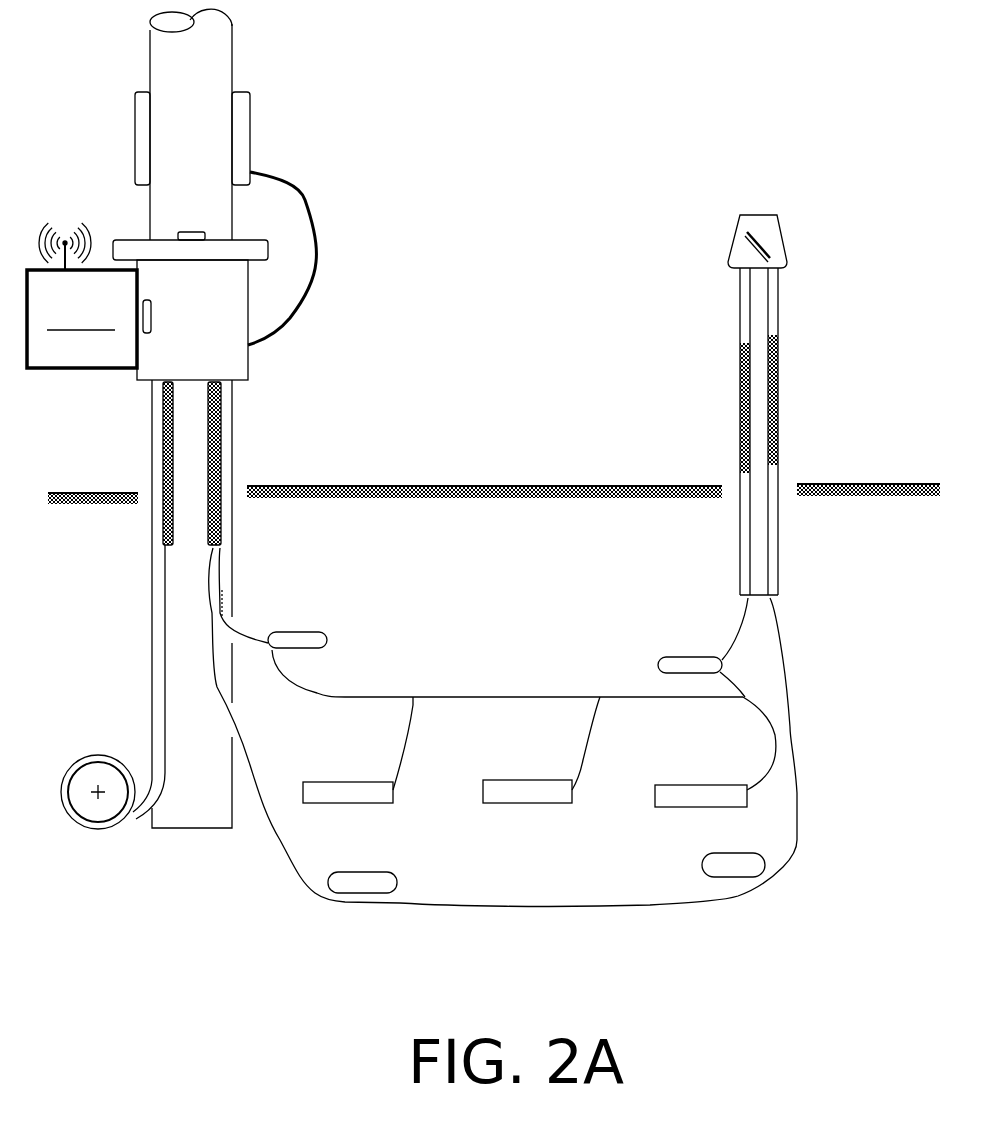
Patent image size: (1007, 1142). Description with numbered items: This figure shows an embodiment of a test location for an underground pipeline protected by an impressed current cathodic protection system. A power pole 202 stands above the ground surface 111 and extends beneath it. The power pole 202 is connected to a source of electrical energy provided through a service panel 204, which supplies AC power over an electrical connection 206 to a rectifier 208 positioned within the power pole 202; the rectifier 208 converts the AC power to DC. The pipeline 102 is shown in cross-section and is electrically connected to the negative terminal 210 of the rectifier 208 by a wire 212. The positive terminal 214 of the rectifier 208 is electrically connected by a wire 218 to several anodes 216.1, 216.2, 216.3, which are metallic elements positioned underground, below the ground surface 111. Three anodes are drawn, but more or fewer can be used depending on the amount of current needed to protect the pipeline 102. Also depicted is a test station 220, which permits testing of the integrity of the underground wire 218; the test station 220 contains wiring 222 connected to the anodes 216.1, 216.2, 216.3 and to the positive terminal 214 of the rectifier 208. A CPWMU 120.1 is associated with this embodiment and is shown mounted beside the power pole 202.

The pipeline 102 is at (98, 832).
The ground surface 111 is at (335, 488).
The CPWMU 120.1 is at (82, 295).
The power pole 202 is at (153, 47).
The service panel 204 is at (250, 93).
The electrical connection 206 is at (300, 192).
The rectifier 208 is at (248, 285).
The negative terminal 210 is at (171, 370).
The wire 212 is at (167, 722).
The positive terminal 214 is at (213, 370).
The anode 216.1 is at (363, 805).
The anode 216.2 is at (522, 806).
The anode 216.3 is at (665, 812).
The wire 218 is at (345, 697).
The test station 220 is at (740, 305).
The wiring 222 is at (778, 620).